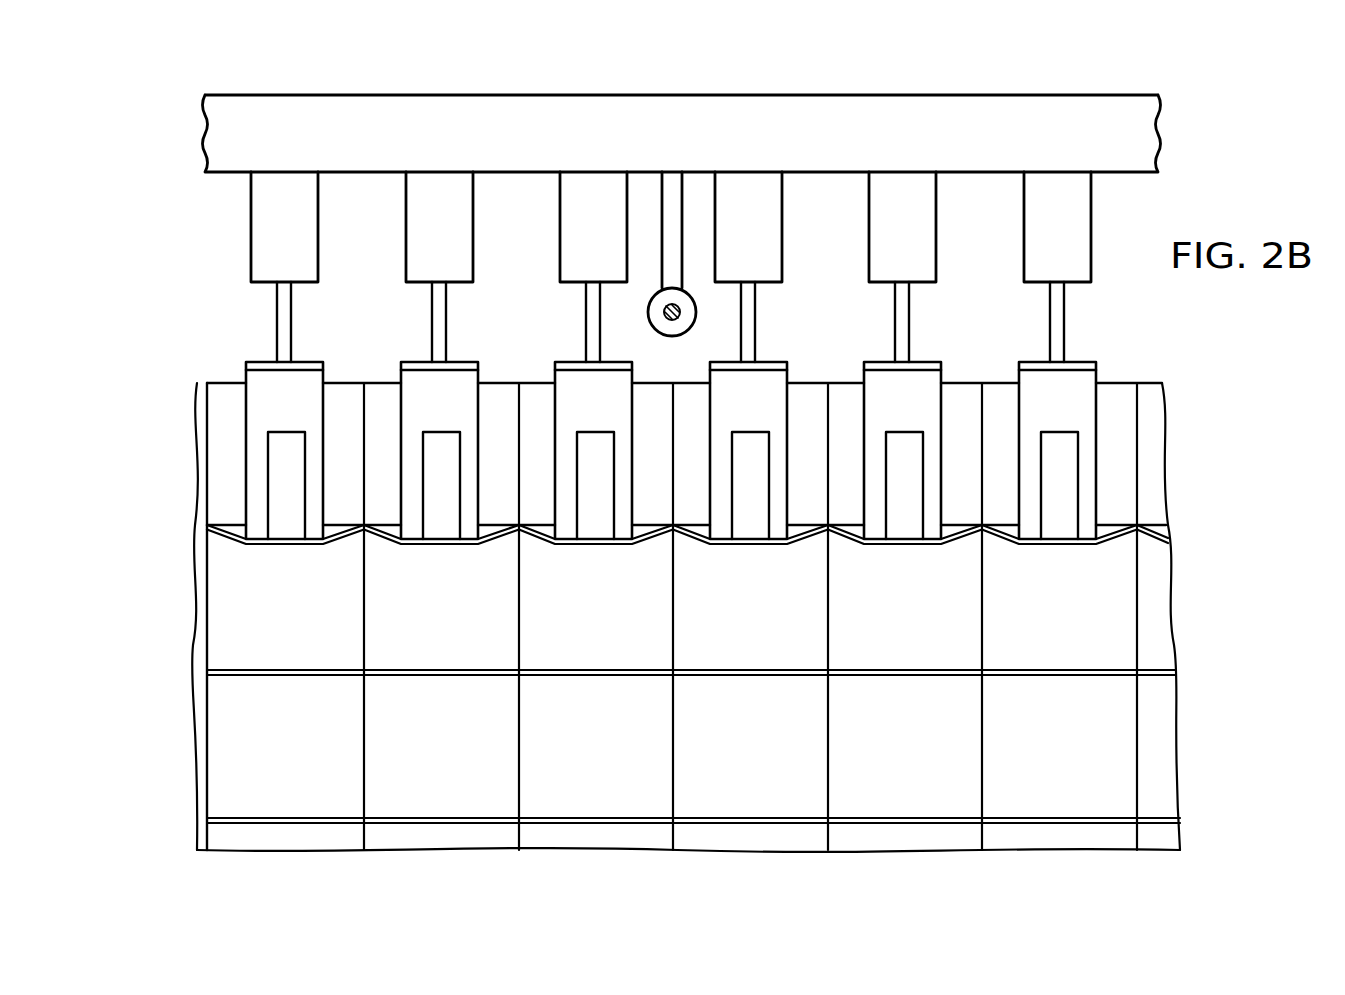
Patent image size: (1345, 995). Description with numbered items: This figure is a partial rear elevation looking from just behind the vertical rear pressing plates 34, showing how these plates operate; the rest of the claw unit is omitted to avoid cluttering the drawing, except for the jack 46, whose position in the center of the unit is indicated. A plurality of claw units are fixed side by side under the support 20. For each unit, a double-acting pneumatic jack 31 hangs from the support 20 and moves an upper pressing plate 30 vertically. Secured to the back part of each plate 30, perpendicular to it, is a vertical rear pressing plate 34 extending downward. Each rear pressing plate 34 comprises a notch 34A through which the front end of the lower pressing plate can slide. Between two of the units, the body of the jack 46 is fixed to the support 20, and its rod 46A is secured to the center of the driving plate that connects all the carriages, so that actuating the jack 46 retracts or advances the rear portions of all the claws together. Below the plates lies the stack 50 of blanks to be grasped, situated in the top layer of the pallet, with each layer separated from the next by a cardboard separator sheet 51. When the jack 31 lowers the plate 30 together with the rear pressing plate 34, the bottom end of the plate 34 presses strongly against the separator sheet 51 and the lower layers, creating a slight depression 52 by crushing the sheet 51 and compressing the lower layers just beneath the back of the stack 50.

The support 20 is at (283, 108).
The double-acting pneumatic jack 31 is at (263, 253).
The upper pressing plate 30 is at (265, 365).
The vertical rear pressing plate 34 is at (261, 390).
The notch 34A is at (285, 436).
The double-acting pneumatic jack 46 is at (672, 324).
The rod 46A is at (683, 312).
The stack 50 is at (227, 431).
The cardboard separator sheet 51 is at (213, 537).
The depression 52 is at (285, 532).